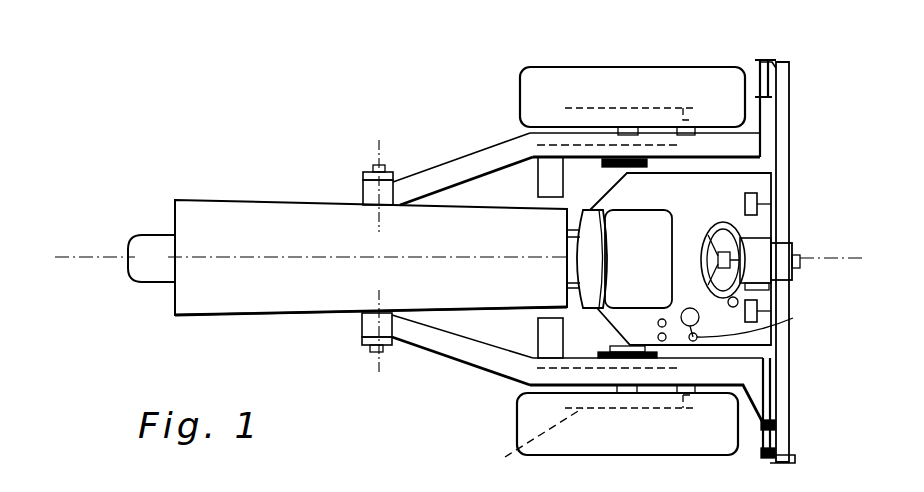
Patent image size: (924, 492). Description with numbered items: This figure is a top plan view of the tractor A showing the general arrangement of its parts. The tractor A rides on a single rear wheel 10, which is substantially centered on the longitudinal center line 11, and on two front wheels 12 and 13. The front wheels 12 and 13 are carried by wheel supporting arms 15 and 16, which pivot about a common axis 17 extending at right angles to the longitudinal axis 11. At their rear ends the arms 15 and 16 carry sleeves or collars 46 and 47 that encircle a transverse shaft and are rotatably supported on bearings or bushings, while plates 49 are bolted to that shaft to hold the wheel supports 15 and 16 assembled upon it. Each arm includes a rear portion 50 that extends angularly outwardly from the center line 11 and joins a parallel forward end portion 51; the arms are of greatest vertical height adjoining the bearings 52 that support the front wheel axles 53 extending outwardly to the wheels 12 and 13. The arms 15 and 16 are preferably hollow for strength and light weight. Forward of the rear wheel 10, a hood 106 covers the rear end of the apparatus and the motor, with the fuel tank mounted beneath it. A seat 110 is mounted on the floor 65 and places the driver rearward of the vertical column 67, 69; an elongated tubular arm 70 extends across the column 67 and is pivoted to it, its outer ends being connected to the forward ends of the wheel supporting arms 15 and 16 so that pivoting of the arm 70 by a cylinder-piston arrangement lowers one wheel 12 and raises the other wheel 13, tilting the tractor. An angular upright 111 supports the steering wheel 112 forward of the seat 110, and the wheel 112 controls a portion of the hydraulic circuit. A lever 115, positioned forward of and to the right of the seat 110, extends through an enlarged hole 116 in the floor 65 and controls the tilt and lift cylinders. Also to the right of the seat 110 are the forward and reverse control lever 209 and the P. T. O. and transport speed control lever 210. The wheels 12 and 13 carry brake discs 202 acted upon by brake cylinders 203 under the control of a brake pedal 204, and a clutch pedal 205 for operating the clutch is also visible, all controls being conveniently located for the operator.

The rear wheel 10 is at (142, 272).
The longitudinal center line 11 is at (57, 257).
The front wheel 12 is at (680, 77).
The front wheel 13 is at (667, 443).
The wheel supporting arm 15 is at (485, 158).
The wheel supporting arm 16 is at (500, 358).
The common axis 17 is at (377, 156).
The sleeve or collar 46 is at (370, 195).
The sleeve or collar 47 is at (370, 323).
The plate 49 is at (427, 128).
The rear portion 50 is at (502, 147).
The parallel forward end portion 51 is at (717, 147).
The bearing 52 is at (622, 165).
The front wheel axle 53 is at (627, 127).
The floor 65 is at (757, 183).
The front column 67 is at (797, 240).
The vertical column 69 is at (762, 263).
The elongated tubular arm 70 is at (783, 390).
The hood 106 is at (232, 218).
The seat 110 is at (656, 243).
The angular upright 111 is at (745, 240).
The steering wheel 112 is at (710, 230).
The lever 115 is at (783, 324).
The enlarged hole 116 is at (689, 316).
The brake disc 202 is at (517, 443).
The brake cylinder 203 is at (692, 390).
The brake pedal 204 is at (812, 290).
The clutch pedal 205 is at (760, 200).
The forward and reverse control lever 209 is at (614, 284).
The P. T. O. and transport speed control lever 210 is at (662, 342).
The tractor A is at (264, 193).